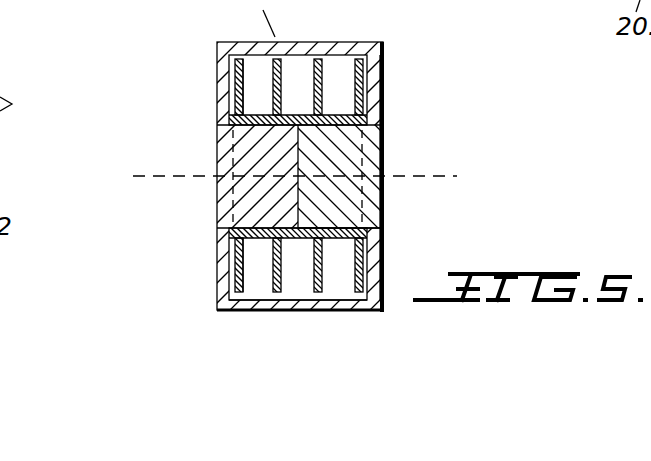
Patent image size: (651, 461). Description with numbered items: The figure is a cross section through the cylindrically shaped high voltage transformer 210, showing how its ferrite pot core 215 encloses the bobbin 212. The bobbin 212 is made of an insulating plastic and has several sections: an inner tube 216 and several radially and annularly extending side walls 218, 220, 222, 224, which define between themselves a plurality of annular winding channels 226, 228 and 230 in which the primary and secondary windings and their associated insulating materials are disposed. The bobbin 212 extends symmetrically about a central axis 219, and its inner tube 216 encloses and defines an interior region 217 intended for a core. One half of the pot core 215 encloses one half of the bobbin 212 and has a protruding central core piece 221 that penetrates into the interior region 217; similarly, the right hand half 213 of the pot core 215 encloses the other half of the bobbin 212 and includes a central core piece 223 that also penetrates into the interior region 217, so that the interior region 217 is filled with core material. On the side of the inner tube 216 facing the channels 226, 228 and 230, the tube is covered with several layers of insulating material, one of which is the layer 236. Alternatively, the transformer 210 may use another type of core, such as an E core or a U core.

The high voltage transformer 210 is at (205, 263).
The bobbin 212 is at (384, 88).
The right hand half of pot core 213 is at (400, 152).
The pot core 215 is at (207, 146).
The inner tube 216 is at (245, 214).
The interior region 217 is at (337, 195).
The side wall 218 is at (240, 80).
The central axis 219 is at (182, 177).
The side wall 220 is at (273, 68).
The central core piece 221 is at (257, 195).
The side wall 222 is at (325, 70).
The central core piece 223 is at (337, 220).
The side wall 224 is at (366, 68).
The annular winding channel 226 is at (255, 97).
The annular winding channel 228 is at (298, 80).
The annular winding channel 230 is at (340, 104).
The layer of insulating material 236 is at (304, 328).